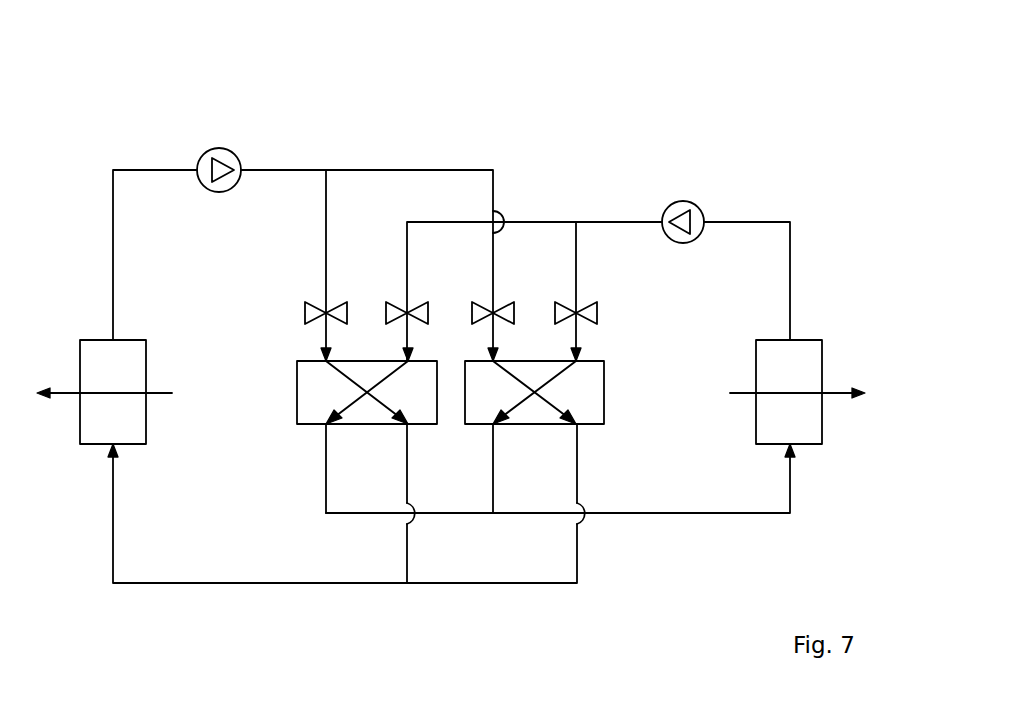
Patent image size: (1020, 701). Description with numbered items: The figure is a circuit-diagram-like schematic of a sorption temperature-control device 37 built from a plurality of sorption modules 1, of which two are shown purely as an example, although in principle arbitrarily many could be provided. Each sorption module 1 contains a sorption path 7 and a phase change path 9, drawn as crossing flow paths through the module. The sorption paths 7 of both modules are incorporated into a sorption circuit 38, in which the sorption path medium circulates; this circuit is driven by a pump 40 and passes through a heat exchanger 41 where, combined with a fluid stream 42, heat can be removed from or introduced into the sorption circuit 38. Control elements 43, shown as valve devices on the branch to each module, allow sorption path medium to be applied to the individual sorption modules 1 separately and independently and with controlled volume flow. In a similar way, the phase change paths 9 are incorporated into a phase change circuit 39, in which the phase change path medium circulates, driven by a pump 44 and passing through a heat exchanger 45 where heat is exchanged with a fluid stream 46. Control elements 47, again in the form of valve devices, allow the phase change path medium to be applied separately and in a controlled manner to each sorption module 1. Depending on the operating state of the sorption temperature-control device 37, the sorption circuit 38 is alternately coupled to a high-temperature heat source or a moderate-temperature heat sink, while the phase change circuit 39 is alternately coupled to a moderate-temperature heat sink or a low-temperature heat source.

The sorption module 1 is at (285, 392).
The sorption path 7 is at (350, 373).
The phase change path 9 is at (350, 410).
The sorption temperature-control device 37 is at (798, 150).
The sorption circuit 38 is at (411, 160).
The phase change circuit 39 is at (620, 212).
The pump 40 is at (220, 148).
The heat exchanger 41 is at (97, 338).
The fluid stream 42 is at (68, 391).
The control element 43 is at (318, 304).
The pump 44 is at (683, 200).
The heat exchanger 45 is at (812, 338).
The fluid stream 46 is at (838, 391).
The control element 47 is at (400, 304).